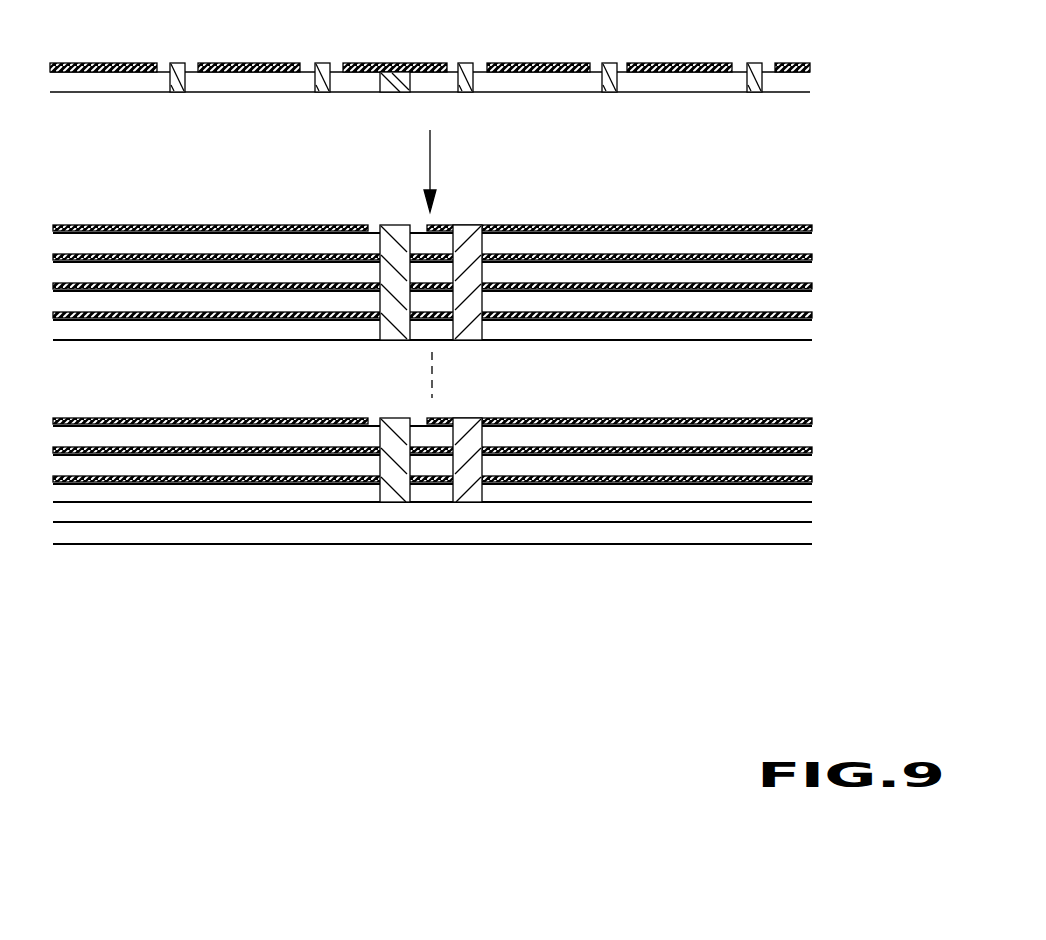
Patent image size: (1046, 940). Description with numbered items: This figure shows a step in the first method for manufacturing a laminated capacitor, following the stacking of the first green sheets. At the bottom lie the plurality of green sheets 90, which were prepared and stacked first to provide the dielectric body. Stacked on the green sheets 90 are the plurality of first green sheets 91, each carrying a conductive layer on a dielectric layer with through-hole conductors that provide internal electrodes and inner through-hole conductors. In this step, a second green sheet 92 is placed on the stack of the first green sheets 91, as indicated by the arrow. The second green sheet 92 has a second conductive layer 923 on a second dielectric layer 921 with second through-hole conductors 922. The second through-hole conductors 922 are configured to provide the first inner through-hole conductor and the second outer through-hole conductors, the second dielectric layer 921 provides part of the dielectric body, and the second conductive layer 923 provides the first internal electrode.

The green sheet 90 is at (814, 515).
The first green sheet 91 is at (814, 238).
The second green sheet 92 is at (466, 79).
The second dielectric layer 921 is at (76, 85).
The second through-hole conductor 922 is at (178, 92).
The second conductive layer 923 is at (97, 62).